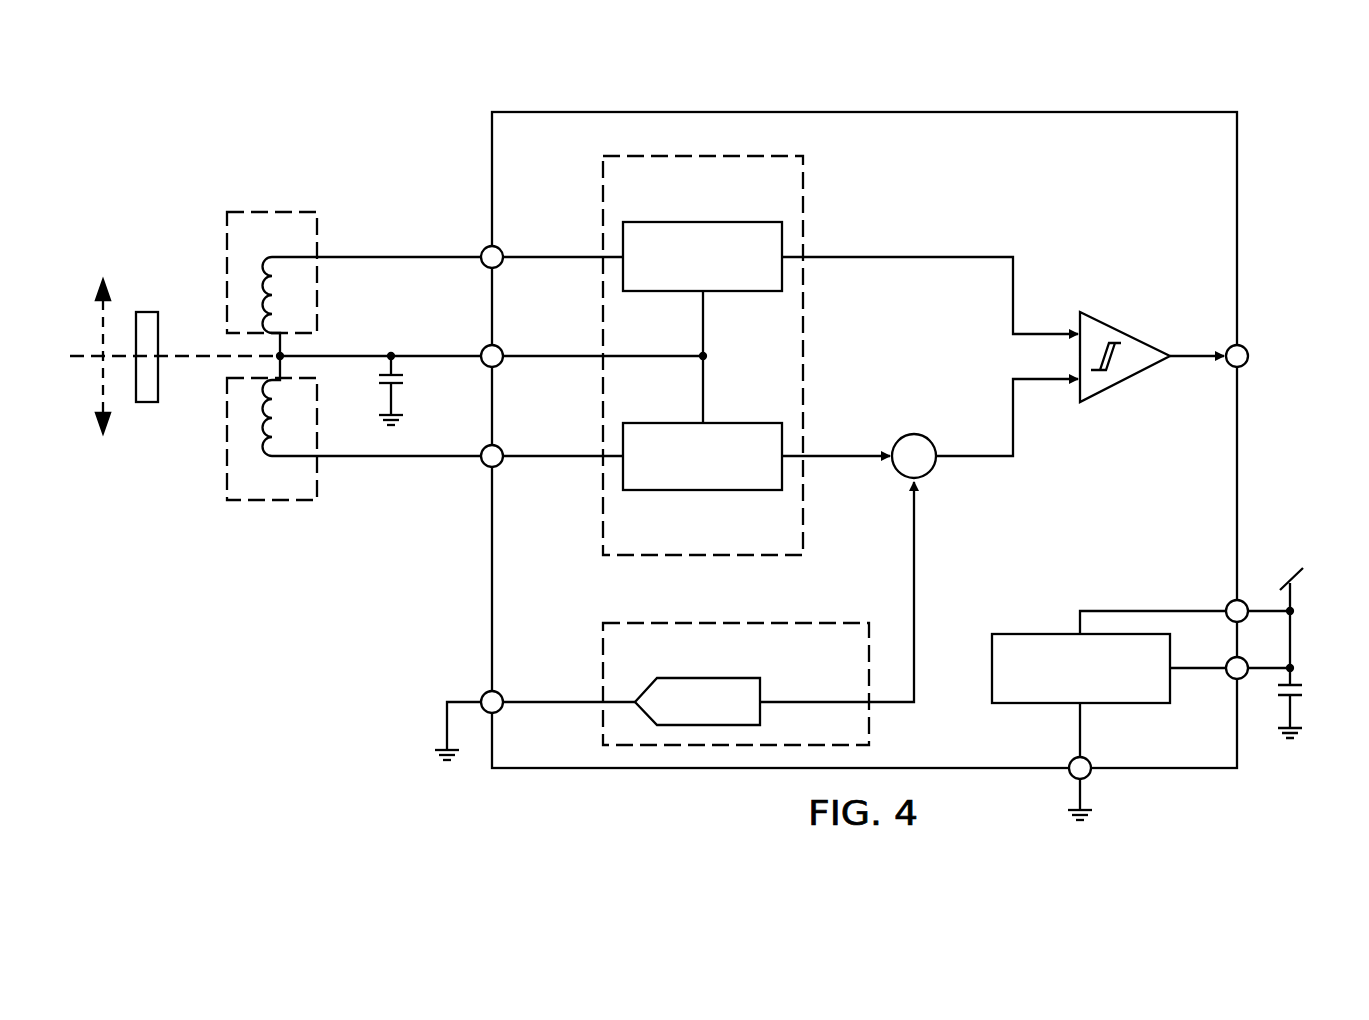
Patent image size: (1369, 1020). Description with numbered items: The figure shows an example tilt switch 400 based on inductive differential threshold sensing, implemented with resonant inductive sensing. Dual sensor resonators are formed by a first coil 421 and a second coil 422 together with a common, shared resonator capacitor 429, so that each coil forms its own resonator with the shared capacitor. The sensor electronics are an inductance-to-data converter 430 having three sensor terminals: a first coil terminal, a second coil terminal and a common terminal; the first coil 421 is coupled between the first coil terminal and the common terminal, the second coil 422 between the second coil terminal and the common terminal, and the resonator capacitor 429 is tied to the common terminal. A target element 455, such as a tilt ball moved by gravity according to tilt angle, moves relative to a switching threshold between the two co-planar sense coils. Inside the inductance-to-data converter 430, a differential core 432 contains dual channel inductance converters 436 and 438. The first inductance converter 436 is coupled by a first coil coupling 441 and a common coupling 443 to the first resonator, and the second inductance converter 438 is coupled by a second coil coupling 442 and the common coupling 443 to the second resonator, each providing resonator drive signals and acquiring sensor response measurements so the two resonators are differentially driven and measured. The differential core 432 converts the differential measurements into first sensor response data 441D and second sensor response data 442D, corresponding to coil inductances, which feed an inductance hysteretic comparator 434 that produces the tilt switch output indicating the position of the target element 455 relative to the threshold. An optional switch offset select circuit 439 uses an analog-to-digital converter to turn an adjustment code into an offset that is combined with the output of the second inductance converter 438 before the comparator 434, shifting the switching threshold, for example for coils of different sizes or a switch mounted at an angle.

The tilt switch 400 is at (694, 431).
The Coil1 421 is at (258, 211).
The Coil2 422 is at (258, 502).
The resonator capacitor CC 429 is at (405, 380).
The inductance-to-data converter (IDC) 430 is at (891, 431).
The differential IDC core 432 is at (746, 355).
The inductance (hysteretic) comparator 434 is at (1068, 305).
The inductance converter 436 is at (725, 292).
The inductance converter 438 is at (713, 492).
The switch offset select circuit 439 is at (733, 620).
The coupling to terminal L1 441 is at (578, 255).
The coupling to terminal L2 442 is at (585, 455).
The coupling to terminal LCOM 443 is at (585, 355).
The sensor response data 441D is at (952, 254).
The sensor response data 442D is at (955, 455).
The target element 455 is at (145, 311).